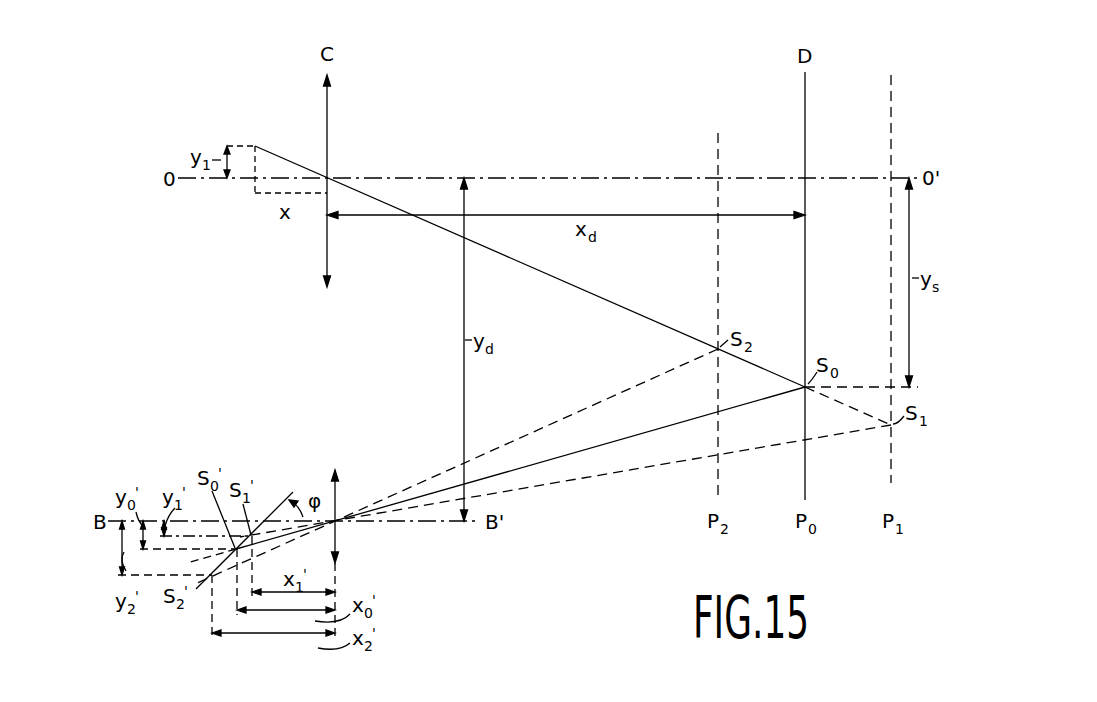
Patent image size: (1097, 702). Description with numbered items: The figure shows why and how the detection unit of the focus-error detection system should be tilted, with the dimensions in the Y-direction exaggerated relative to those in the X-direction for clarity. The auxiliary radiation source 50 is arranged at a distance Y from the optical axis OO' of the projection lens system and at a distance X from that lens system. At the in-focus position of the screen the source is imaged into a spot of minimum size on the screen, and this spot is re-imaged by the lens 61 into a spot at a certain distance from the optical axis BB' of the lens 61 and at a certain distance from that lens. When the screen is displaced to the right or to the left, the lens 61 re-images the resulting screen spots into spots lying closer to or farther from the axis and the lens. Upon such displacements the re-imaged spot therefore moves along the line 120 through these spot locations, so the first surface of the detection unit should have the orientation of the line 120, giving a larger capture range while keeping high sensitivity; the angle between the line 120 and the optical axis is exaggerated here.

The auxiliary radiation source 50 is at (564, 263).
The lens 61 is at (335, 541).
The line 120 is at (287, 502).